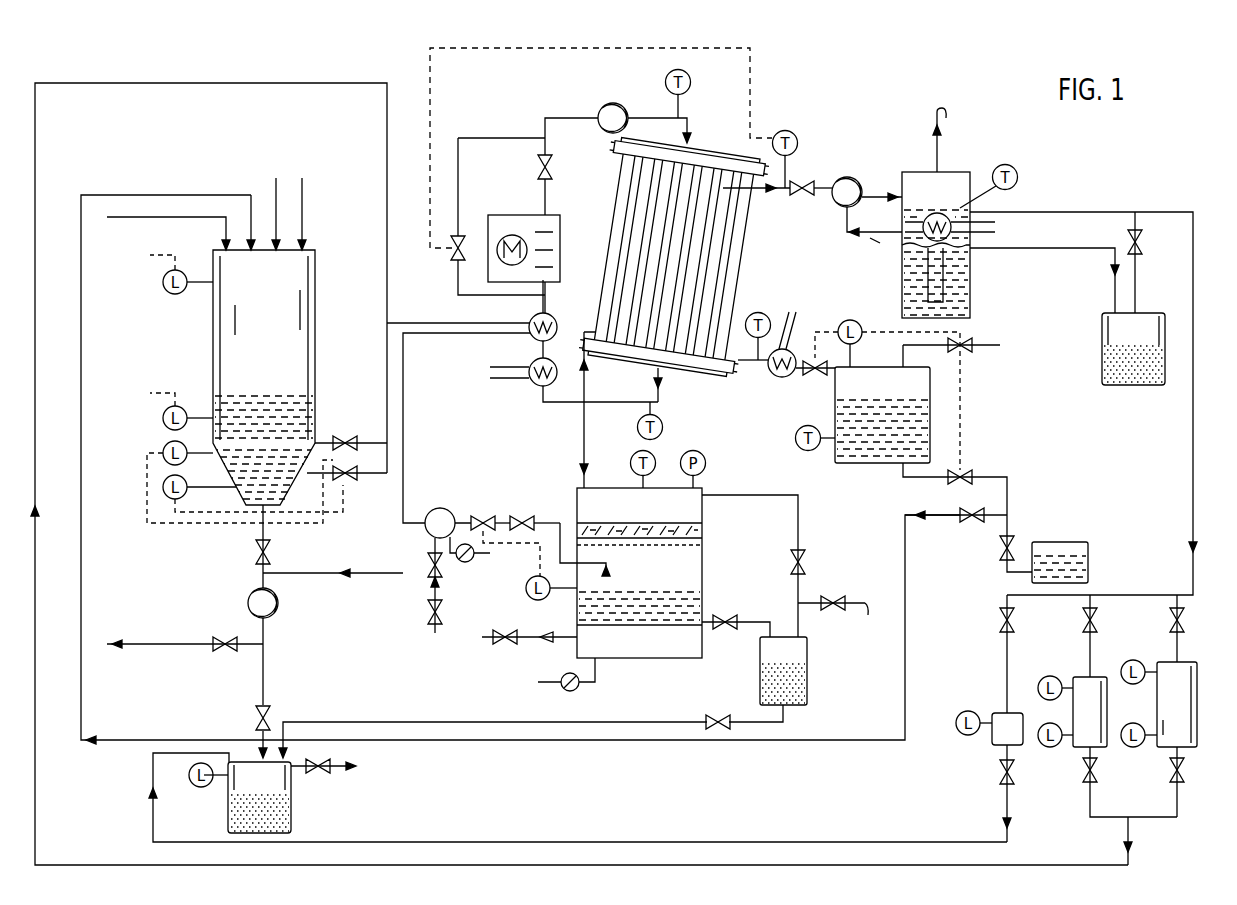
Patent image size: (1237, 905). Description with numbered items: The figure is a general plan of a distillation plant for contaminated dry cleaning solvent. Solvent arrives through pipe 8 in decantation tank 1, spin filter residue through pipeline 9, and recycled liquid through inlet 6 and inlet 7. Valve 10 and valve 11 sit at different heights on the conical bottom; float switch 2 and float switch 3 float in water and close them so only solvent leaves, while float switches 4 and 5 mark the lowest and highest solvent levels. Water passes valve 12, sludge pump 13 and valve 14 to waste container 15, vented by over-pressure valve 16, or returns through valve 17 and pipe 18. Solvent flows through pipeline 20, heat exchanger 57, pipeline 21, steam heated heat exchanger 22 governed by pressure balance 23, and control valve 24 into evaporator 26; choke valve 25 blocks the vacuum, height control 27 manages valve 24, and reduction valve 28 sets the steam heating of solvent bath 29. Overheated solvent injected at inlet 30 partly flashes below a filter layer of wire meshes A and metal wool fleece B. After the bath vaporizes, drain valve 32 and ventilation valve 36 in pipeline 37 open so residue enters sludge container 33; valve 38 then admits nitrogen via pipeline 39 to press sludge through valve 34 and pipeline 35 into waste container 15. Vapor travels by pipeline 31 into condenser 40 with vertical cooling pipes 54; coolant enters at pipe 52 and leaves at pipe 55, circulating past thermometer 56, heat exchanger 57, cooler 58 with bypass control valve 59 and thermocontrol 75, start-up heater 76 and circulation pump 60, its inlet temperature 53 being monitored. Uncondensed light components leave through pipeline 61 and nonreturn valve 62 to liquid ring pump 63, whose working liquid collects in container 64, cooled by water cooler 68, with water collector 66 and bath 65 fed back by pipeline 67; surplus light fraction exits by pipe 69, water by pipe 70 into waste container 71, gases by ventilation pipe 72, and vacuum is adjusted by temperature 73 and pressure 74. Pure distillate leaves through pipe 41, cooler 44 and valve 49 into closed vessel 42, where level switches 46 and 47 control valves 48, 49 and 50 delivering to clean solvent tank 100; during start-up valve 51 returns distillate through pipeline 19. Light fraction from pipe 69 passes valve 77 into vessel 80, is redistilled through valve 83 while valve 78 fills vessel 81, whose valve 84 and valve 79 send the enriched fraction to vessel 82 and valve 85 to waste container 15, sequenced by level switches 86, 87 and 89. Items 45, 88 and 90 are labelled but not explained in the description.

The decantation tank 1 is at (276, 326).
The float switch 2 is at (163, 487).
The float switch 3 is at (163, 453).
The float switch 4 is at (163, 418).
The float switch 5 is at (163, 284).
The inlet 6 is at (224, 236).
The inlet 7 is at (251, 237).
The pipe 8 is at (276, 200).
The pipeline 9 is at (302, 200).
The valve 10 is at (345, 436).
The valve 11 is at (349, 482).
The valve 12 is at (272, 552).
The sludge pump 13 is at (278, 602).
The valve 14 is at (256, 718).
The waste container 15 is at (230, 812).
The over-pressure valve 16 is at (323, 773).
The valve 17 is at (223, 637).
The pipe 18 is at (108, 364).
The pipeline 19 is at (80, 405).
The pipeline 20 is at (386, 352).
The pipeline 21 is at (403, 390).
The steam heated heat exchanger 22 is at (433, 508).
The pressure balance 23 is at (432, 573).
The control valve 24 is at (483, 512).
The choke valve 25 is at (520, 512).
The evaporator 26 is at (644, 519).
The height control 27 is at (526, 588).
The reduction valve 28 is at (530, 645).
The solvent bath 29 is at (657, 621).
The inlet 30 is at (610, 562).
The pipeline 31 is at (584, 445).
The drain valve 32 is at (718, 619).
The sludge container 33 is at (800, 667).
The valve 34 is at (718, 714).
The pipeline 35 is at (325, 722).
The ventilation valve 36 is at (792, 562).
The pipeline 37 is at (750, 495).
The valve 38 is at (828, 603).
The pipeline 39 is at (878, 624).
The condenser 40 is at (688, 257).
The pipe 41 is at (741, 370).
The closed vessel 42 is at (899, 394).
The cooler 44 is at (778, 380).
The line 45 is at (842, 466).
The level switch 46 is at (845, 320).
The level switch 47 is at (812, 452).
The ventilation valve 48 is at (970, 353).
The valve 49 is at (815, 380).
The outlet valve 50 is at (971, 470).
The valve 51 is at (970, 526).
The pipe 52 is at (692, 133).
The coolant inlet temperature 53 is at (692, 80).
The vertical cooling pipes 54 is at (745, 236).
The pipe 55 is at (664, 384).
The thermometer 56 is at (637, 427).
The heat exchanger for heat recovery 57 is at (556, 319).
The cooler 58 is at (555, 218).
The bypass control valve 59 is at (450, 258).
The circulation pump 60 is at (604, 107).
The pipeline 61 is at (768, 192).
The nonreturn valve 62 is at (802, 179).
The liquid ring pump 63 is at (851, 177).
The container 64 is at (952, 197).
The container 65 is at (902, 224).
The water collector 66 is at (915, 262).
The pipeline 67 is at (870, 238).
The water cooler 68 is at (925, 217).
The pipe 69 is at (1100, 212).
The pipe 70 is at (1070, 250).
The waste container 71 is at (1102, 362).
The ventilation pipe 72 is at (935, 108).
The temperature 73 is at (1018, 177).
The pressure 74 is at (707, 466).
The thermocontrol 75 is at (785, 130).
The start-up heater 76 is at (532, 384).
The valve 77 is at (1183, 621).
The inlet valve 78 is at (1085, 623).
The valve 79 is at (1000, 623).
The vessel 80 is at (1192, 712).
The vessel 81 is at (1102, 719).
The vessel 82 is at (1021, 741).
The outlet valve 83 is at (1183, 772).
The valve 84 is at (1085, 780).
The valve 85 is at (1000, 770).
The level switch 86 is at (1133, 660).
The level switch 87 is at (1133, 748).
The level sensor 88 is at (1052, 660).
The level switch 89 is at (1050, 748).
The level sensor 90 is at (958, 711).
The clean solvent tank 100 is at (1088, 553).
The wire meshes A is at (698, 544).
The metal wool fleece B is at (700, 522).